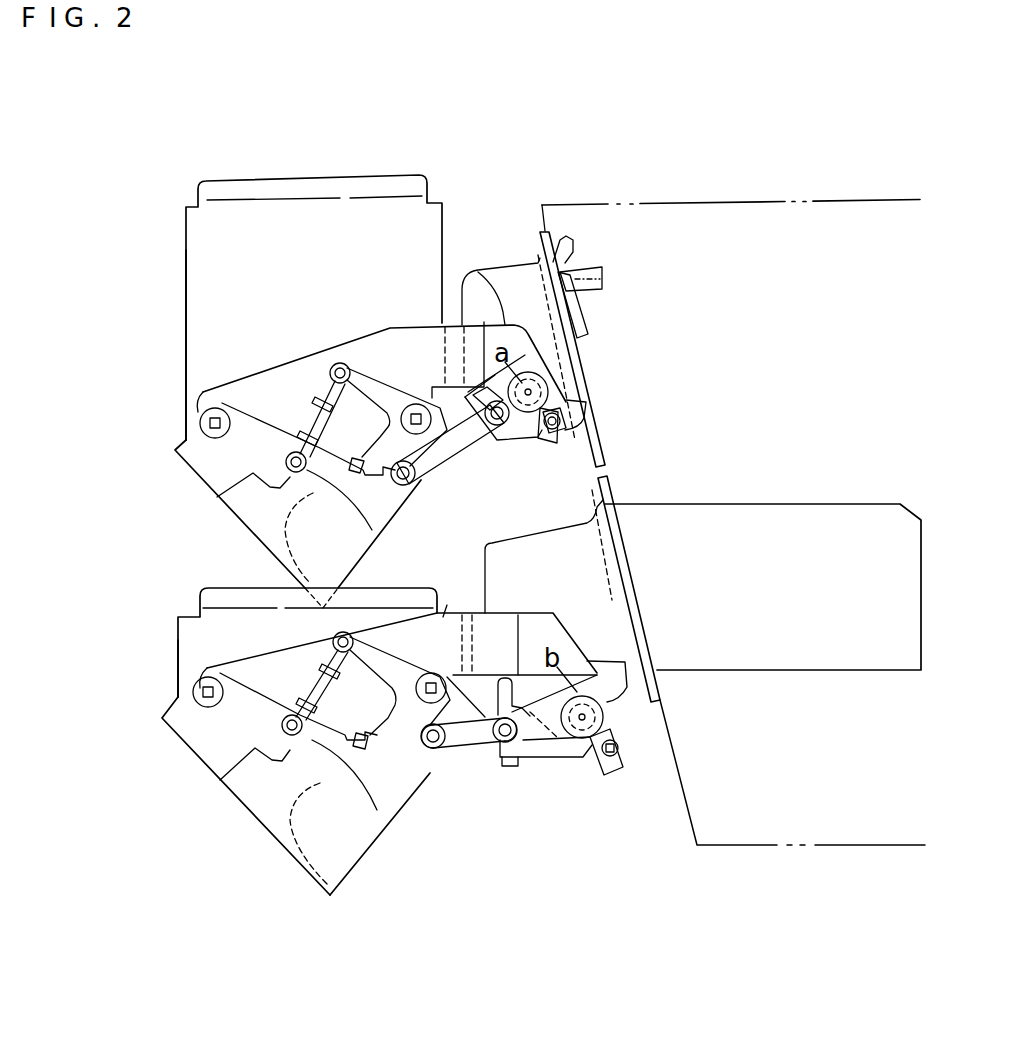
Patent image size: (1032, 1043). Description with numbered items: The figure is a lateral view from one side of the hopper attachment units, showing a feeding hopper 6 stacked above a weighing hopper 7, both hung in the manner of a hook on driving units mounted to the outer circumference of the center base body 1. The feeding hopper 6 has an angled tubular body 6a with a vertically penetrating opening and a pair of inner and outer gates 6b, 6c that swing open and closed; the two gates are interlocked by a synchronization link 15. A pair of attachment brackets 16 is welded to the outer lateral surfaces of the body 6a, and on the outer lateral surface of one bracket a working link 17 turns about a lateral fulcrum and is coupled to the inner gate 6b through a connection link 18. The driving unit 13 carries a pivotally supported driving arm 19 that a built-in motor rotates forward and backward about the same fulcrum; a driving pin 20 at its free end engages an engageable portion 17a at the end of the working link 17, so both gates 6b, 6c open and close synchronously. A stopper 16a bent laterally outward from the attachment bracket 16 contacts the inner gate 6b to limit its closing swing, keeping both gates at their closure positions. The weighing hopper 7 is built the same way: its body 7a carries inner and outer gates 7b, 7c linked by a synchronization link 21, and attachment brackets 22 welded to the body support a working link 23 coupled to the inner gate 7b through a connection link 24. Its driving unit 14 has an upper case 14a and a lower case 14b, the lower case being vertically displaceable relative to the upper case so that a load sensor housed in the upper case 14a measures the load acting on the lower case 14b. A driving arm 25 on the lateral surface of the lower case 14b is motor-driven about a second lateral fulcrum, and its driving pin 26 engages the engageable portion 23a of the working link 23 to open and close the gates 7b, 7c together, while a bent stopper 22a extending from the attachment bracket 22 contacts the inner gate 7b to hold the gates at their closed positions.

The center base body 1 is at (695, 204).
The feeding hopper 6 is at (183, 241).
The body 6a is at (185, 312).
The inner gate 6b is at (393, 517).
The outer gate 6c is at (238, 517).
The weighing hopper 7 is at (177, 643).
The body 7a is at (178, 675).
The inner gate 7b is at (398, 805).
The outer gate 7c is at (253, 813).
The driving unit 13 is at (518, 251).
The driving unit 14 is at (630, 504).
The upper case 14a is at (484, 560).
The lower case 14b is at (527, 767).
The synchronization link 15 is at (315, 410).
The attachment bracket 16 is at (478, 272).
The stopper 16a is at (355, 453).
The working link 17 is at (515, 440).
The engageable portion 17a is at (573, 423).
The connection link 18 is at (472, 450).
The driving arm 19 is at (563, 412).
The driving pin 20 is at (563, 443).
The synchronization link 21 is at (317, 680).
The attachment bracket 22 is at (565, 627).
The bent stopper 22a is at (353, 733).
The working link 23 is at (543, 757).
The engageable portion 23a is at (600, 775).
The connection link 24 is at (477, 748).
The driving arm 25 is at (604, 716).
The driving pin 26 is at (616, 753).